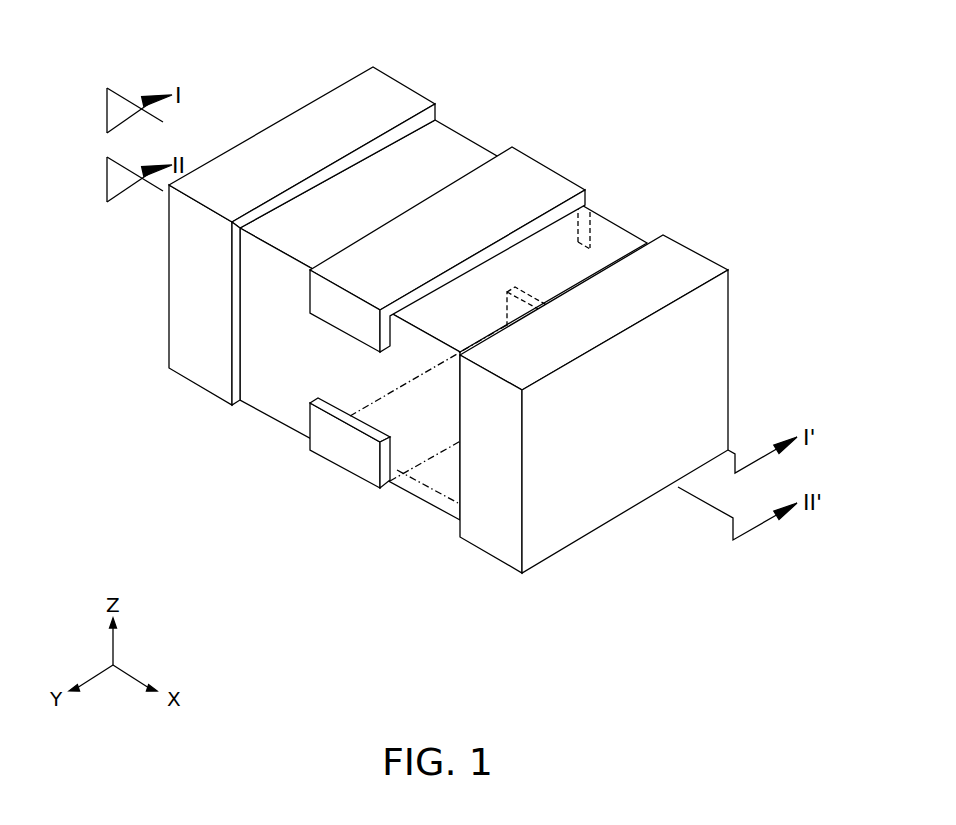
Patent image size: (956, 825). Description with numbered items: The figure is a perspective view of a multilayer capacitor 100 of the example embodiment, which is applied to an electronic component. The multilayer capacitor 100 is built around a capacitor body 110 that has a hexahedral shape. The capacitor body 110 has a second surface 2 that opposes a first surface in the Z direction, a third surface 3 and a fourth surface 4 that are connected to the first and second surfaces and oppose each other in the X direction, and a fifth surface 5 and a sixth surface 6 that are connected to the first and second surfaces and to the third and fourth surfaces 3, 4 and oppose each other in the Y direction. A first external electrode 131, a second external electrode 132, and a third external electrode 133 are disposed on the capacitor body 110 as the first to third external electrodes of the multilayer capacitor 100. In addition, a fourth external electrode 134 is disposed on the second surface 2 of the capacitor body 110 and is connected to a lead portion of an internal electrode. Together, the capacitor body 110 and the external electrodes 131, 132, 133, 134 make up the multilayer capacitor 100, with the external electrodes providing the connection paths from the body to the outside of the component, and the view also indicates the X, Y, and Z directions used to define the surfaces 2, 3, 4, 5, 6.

The multilayer capacitor 100 is at (317, 21).
The capacitor body 110 is at (598, 238).
The first external electrode 131 is at (183, 298).
The second external electrode 132 is at (600, 507).
The third external electrode 133 is at (362, 467).
The fourth external electrode 134 is at (537, 183).
The second surface 2 is at (445, 152).
The third surface 3 is at (285, 150).
The fourth surface 4 is at (700, 360).
The fifth surface 5 is at (300, 402).
The sixth surface 6 is at (600, 252).